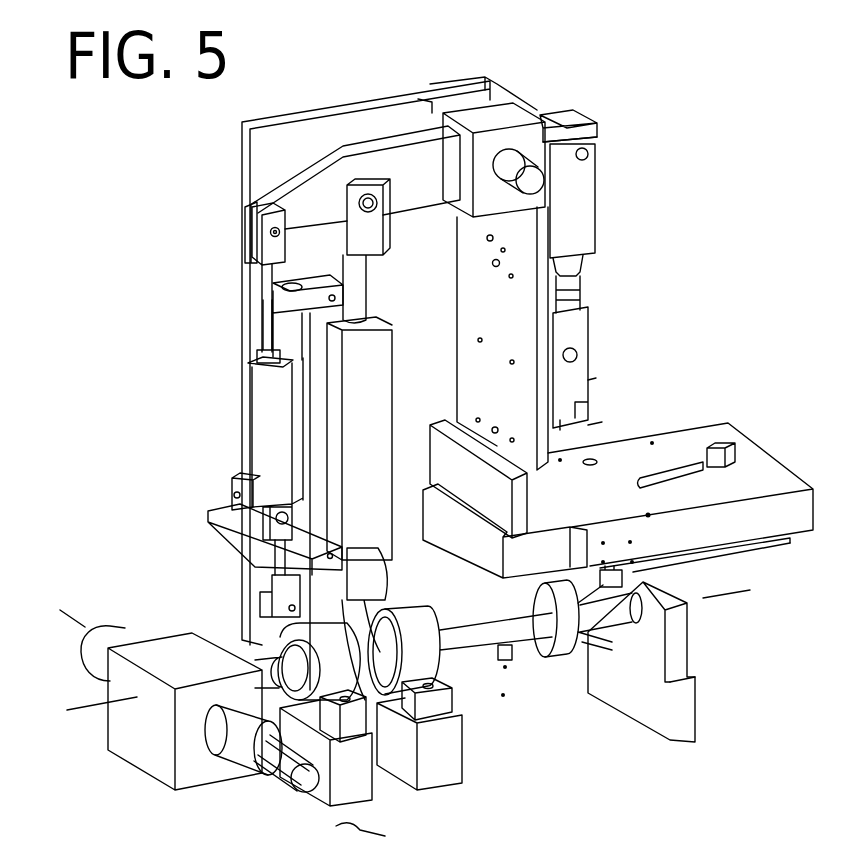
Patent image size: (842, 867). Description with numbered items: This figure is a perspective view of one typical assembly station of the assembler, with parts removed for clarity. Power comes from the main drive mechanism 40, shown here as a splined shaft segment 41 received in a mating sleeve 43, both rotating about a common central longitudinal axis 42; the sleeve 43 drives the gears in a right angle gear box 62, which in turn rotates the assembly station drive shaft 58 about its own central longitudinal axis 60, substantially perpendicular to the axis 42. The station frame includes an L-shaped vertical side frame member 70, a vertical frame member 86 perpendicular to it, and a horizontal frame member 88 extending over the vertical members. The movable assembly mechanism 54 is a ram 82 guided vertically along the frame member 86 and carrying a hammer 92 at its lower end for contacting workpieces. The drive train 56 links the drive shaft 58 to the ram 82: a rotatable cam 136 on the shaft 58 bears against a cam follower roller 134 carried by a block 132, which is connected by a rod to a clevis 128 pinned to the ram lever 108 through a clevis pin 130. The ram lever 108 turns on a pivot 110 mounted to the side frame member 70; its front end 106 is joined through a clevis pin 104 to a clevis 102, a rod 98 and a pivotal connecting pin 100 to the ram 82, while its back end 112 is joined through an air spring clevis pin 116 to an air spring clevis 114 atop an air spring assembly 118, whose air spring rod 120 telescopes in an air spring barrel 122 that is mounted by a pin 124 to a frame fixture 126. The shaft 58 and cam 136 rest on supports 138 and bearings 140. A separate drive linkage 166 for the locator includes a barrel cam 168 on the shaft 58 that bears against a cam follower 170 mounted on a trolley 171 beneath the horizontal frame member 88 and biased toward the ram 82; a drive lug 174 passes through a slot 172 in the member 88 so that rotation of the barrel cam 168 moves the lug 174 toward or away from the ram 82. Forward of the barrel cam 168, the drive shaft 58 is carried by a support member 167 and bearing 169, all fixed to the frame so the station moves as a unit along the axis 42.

The main drive mechanism 40 is at (122, 634).
The splined shaft segment 41 is at (277, 765).
The central longitudinal axis 42 is at (74, 622).
The sleeve 43 is at (217, 722).
The movable assembly mechanism 54 is at (585, 328).
The drive train 56 is at (293, 180).
The assembly station drive shaft 58 is at (497, 650).
The central longitudinal axis 60 is at (742, 596).
The gear box 62 is at (145, 762).
The vertical side frame member 70 is at (303, 113).
The ram 82 is at (590, 390).
The vertical frame member 86 is at (473, 302).
The horizontal frame member 88 is at (702, 427).
The hammer 92 is at (590, 430).
The rod 98 is at (570, 297).
The pivotal connecting pin 100 is at (578, 355).
The clevis 102 is at (578, 207).
The clevis pin 104 is at (588, 155).
The front end 106 is at (598, 126).
The ram lever 108 is at (568, 113).
The pivot 110 is at (516, 156).
The back end 112 is at (250, 222).
The air spring clevis 114 is at (245, 256).
The air spring clevis pin 116 is at (281, 232).
The air spring assembly 118 is at (248, 387).
The air spring rod 120 is at (268, 327).
The air spring barrel 122 is at (254, 437).
The pin 124 is at (290, 516).
The frame fixture 126 is at (265, 537).
The clevis 128 is at (370, 238).
The clevis pin 130 is at (378, 198).
The block 132 is at (374, 418).
The cam follower roller 134 is at (368, 570).
The rotatable cam 136 is at (360, 622).
The support 138 is at (363, 776).
The bearing 140 is at (360, 716).
The drive linkage 166 is at (578, 663).
The support member 167 is at (692, 705).
The barrel cam 168 is at (544, 604).
The bearing 169 is at (640, 626).
The cam follower 170 is at (605, 580).
The trolley 171 is at (765, 544).
The slot 172 is at (640, 482).
The drive lug 174 is at (728, 456).